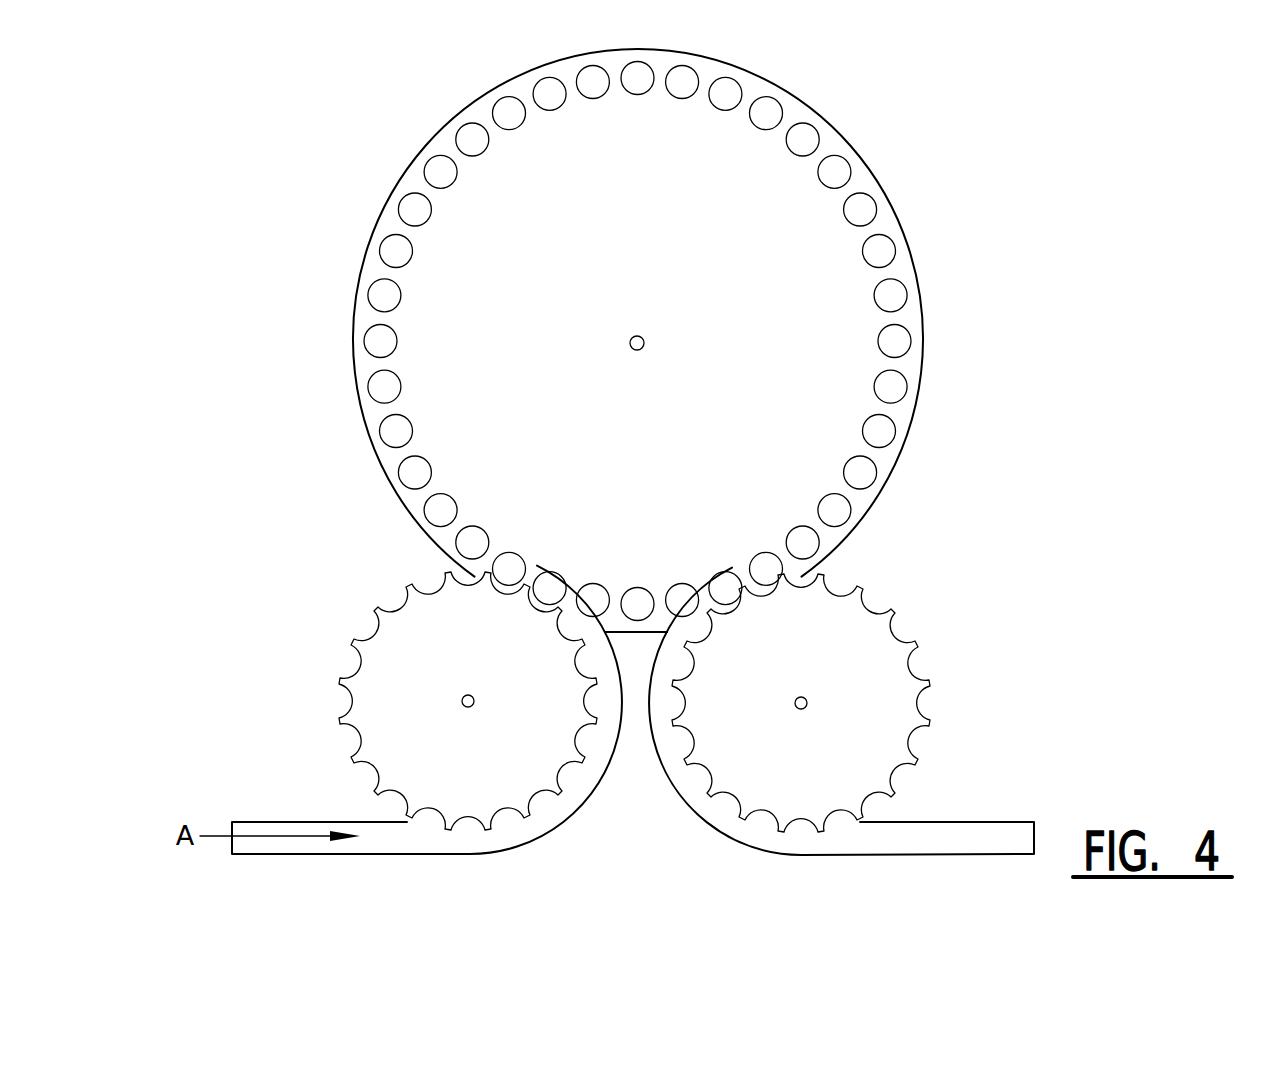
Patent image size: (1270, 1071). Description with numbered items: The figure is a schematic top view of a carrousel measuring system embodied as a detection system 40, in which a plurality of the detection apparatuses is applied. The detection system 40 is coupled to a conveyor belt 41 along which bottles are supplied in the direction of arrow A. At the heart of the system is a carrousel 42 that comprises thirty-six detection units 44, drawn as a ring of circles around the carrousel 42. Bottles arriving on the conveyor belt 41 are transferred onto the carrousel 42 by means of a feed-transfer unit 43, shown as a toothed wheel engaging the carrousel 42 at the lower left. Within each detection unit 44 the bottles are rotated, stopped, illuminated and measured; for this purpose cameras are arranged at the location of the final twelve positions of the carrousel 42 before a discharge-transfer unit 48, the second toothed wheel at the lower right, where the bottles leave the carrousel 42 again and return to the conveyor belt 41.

The detection system 40 is at (672, 452).
The conveyor belt 41 is at (263, 832).
The carrousel 42 is at (946, 252).
The feed-transfer unit 43 is at (378, 643).
The detection units 44 is at (806, 138).
The discharge-transfer unit 48 is at (893, 647).